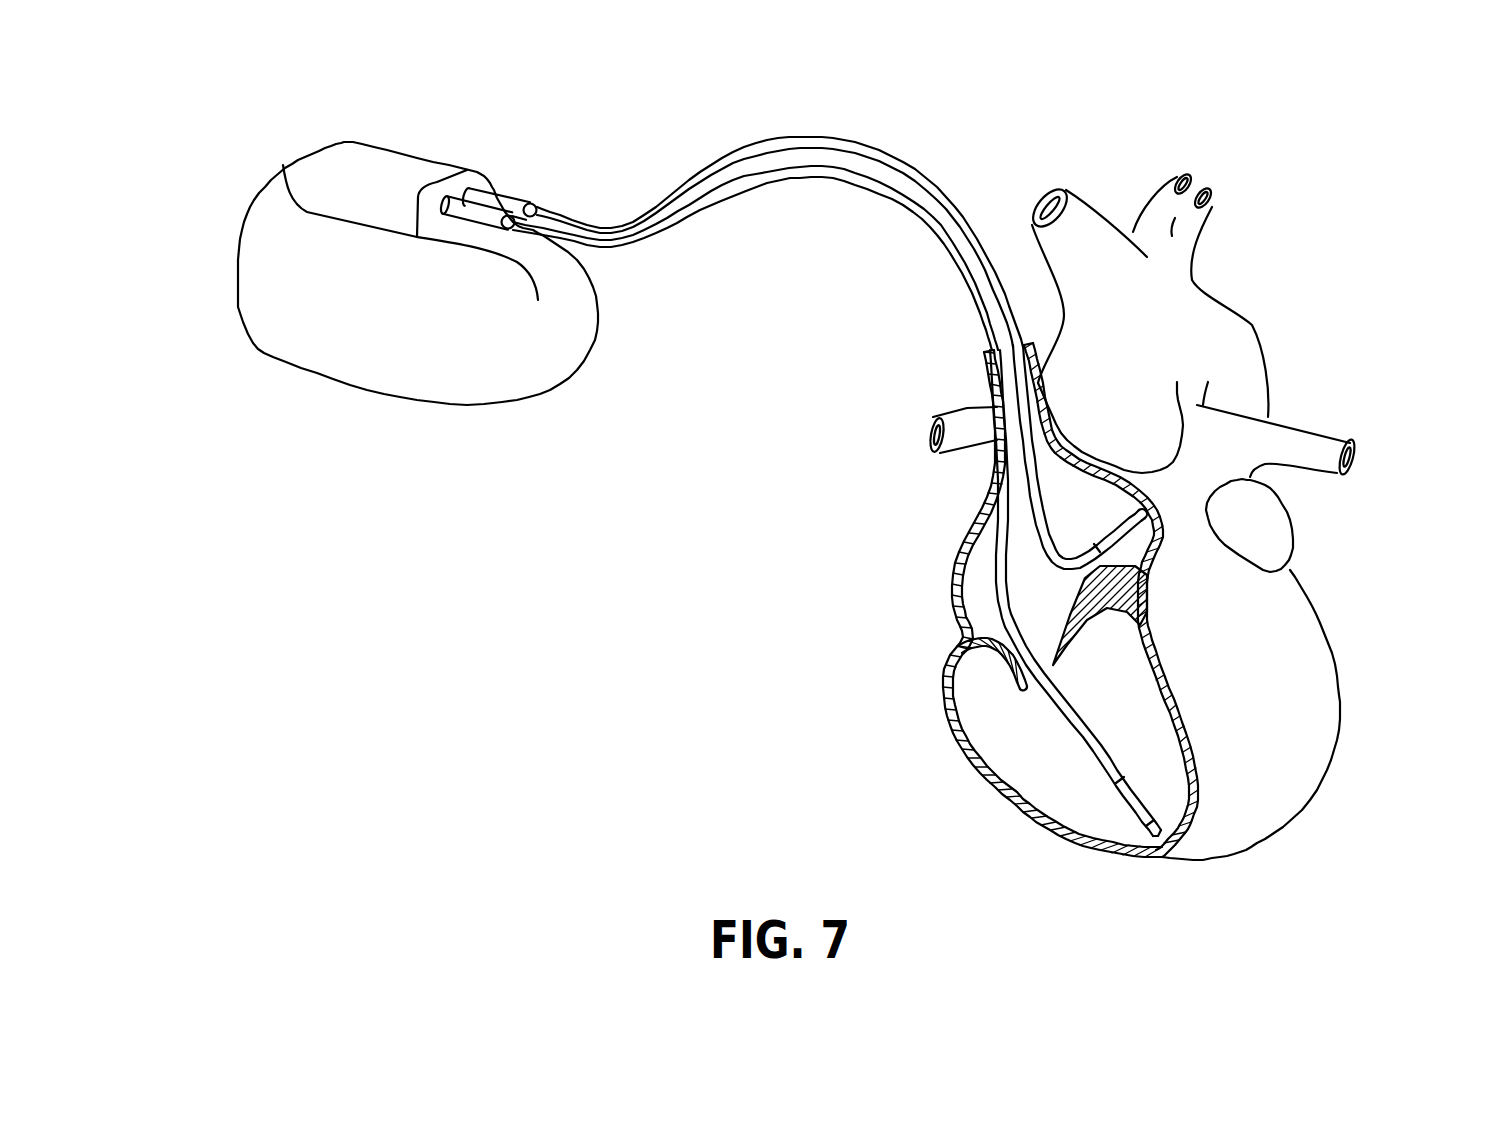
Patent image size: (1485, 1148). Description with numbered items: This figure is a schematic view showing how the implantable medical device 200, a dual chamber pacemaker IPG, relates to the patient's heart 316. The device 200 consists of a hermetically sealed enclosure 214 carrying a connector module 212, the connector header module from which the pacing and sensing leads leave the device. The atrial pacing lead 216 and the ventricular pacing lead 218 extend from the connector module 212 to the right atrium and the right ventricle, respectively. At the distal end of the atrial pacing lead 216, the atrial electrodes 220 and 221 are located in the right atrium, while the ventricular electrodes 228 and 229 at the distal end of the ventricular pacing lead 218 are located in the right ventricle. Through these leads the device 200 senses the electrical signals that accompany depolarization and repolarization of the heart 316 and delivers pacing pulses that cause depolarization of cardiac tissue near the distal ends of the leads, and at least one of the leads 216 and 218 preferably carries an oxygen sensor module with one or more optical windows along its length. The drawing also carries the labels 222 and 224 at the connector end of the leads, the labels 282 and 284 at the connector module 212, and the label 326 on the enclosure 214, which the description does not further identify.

The implantable medical device 200 is at (606, 365).
The connector module 212 is at (455, 125).
The hermetically sealed enclosure 214 is at (470, 413).
The atrial pacing lead 216 is at (810, 140).
The ventricular pacing lead 218 is at (803, 172).
The atrial electrode 220 is at (1093, 550).
The atrial electrode 221 is at (1130, 518).
The lead connector 222 is at (517, 200).
The lead connector 224 is at (533, 204).
The ventricular electrode 228 is at (1117, 790).
The ventricular electrode 229 is at (1167, 843).
The connector receptacle 282 is at (466, 192).
The connector bore 284 is at (446, 212).
The heart 316 is at (1290, 643).
The top surface of housing 326 is at (313, 187).